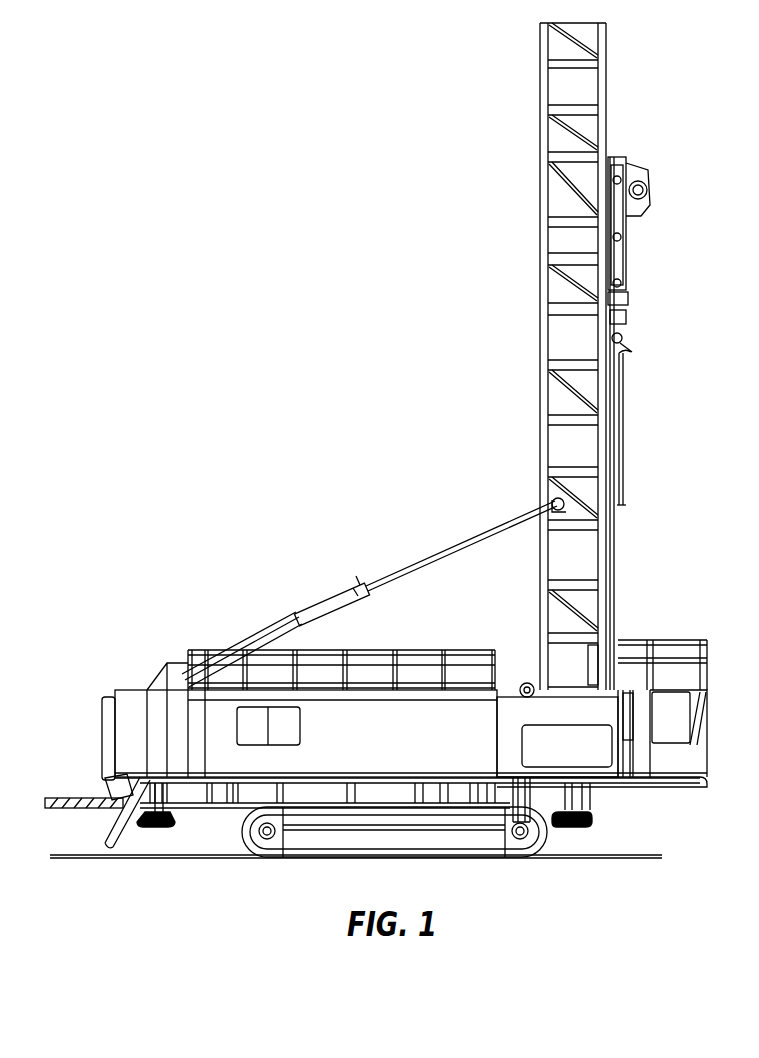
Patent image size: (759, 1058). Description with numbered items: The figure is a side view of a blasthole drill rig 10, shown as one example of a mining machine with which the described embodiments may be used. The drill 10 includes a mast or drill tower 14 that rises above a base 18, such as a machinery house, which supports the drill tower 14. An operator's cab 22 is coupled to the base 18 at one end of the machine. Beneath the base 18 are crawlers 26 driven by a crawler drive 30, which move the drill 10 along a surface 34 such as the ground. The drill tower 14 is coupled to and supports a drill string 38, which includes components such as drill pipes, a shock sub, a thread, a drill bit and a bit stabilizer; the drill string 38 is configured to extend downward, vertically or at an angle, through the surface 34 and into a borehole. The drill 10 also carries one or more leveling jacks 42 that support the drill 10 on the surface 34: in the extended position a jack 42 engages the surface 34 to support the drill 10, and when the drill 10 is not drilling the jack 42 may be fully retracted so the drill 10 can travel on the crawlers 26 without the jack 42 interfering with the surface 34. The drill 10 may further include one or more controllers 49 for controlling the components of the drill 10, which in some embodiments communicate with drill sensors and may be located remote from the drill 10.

The blasthole drill rig 10 is at (205, 543).
The drill tower 14 is at (537, 290).
The base 18 is at (405, 730).
The operator's cab 22 is at (678, 765).
The crawlers 26 is at (243, 840).
The crawler drive 30 is at (530, 856).
The surface 34 is at (627, 855).
The drill string 38 is at (623, 506).
The leveling jacks 42 is at (162, 828).
The controllers 49 is at (597, 733).